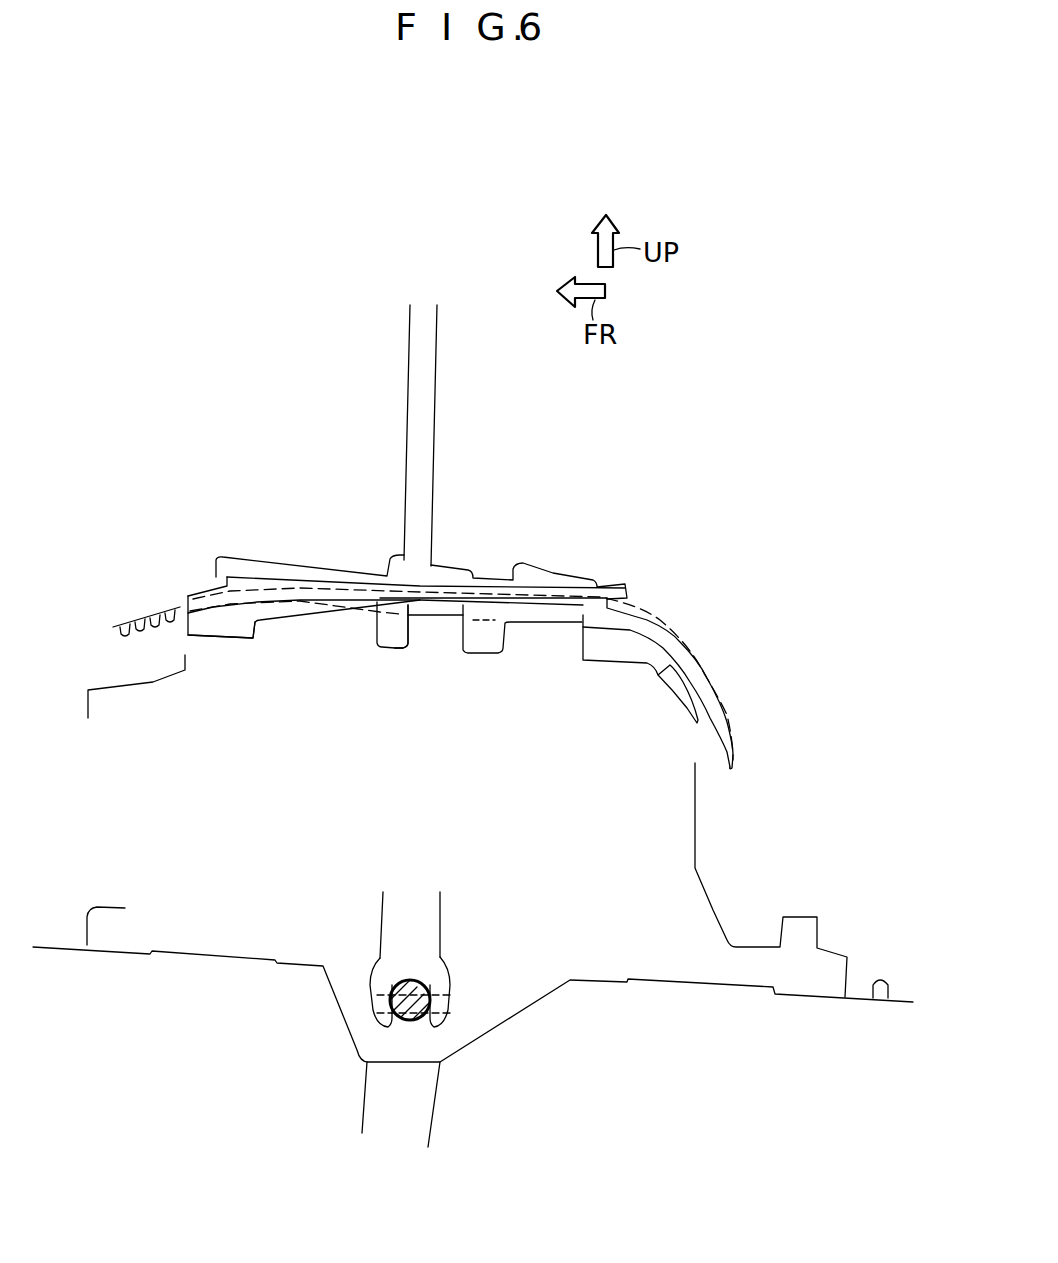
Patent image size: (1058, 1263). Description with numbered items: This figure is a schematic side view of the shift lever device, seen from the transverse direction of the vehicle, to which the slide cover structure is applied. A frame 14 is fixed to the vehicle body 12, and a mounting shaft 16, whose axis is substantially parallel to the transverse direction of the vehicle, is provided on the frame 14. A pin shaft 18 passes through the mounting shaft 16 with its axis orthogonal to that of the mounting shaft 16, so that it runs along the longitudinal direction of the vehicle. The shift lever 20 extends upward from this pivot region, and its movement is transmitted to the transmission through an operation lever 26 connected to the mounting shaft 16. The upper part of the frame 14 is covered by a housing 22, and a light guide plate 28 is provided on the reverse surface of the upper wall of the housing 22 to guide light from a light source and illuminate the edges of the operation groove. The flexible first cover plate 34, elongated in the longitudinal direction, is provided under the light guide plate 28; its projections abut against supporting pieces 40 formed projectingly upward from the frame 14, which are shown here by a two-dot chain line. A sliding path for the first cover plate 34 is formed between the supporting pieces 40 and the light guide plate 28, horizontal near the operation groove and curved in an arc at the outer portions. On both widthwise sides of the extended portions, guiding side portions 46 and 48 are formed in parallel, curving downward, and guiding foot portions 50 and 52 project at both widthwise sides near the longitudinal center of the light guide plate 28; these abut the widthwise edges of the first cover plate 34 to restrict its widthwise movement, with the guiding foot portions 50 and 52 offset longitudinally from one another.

The vehicle body 12 is at (885, 998).
The frame 14 is at (718, 907).
The mounting shaft 16 is at (413, 1023).
The pin shaft 18 is at (450, 980).
The shift lever 20 is at (430, 418).
The housing 22 is at (252, 560).
The operation lever 26 is at (418, 1132).
The light guide plate 28 is at (558, 590).
The first cover plate 34 is at (147, 610).
The supporting pieces 40 is at (307, 603).
The guiding side portion 46 is at (227, 625).
The guiding side portion 48 is at (657, 678).
The guiding foot portion 50 is at (385, 637).
The guiding foot portion 52 is at (477, 648).